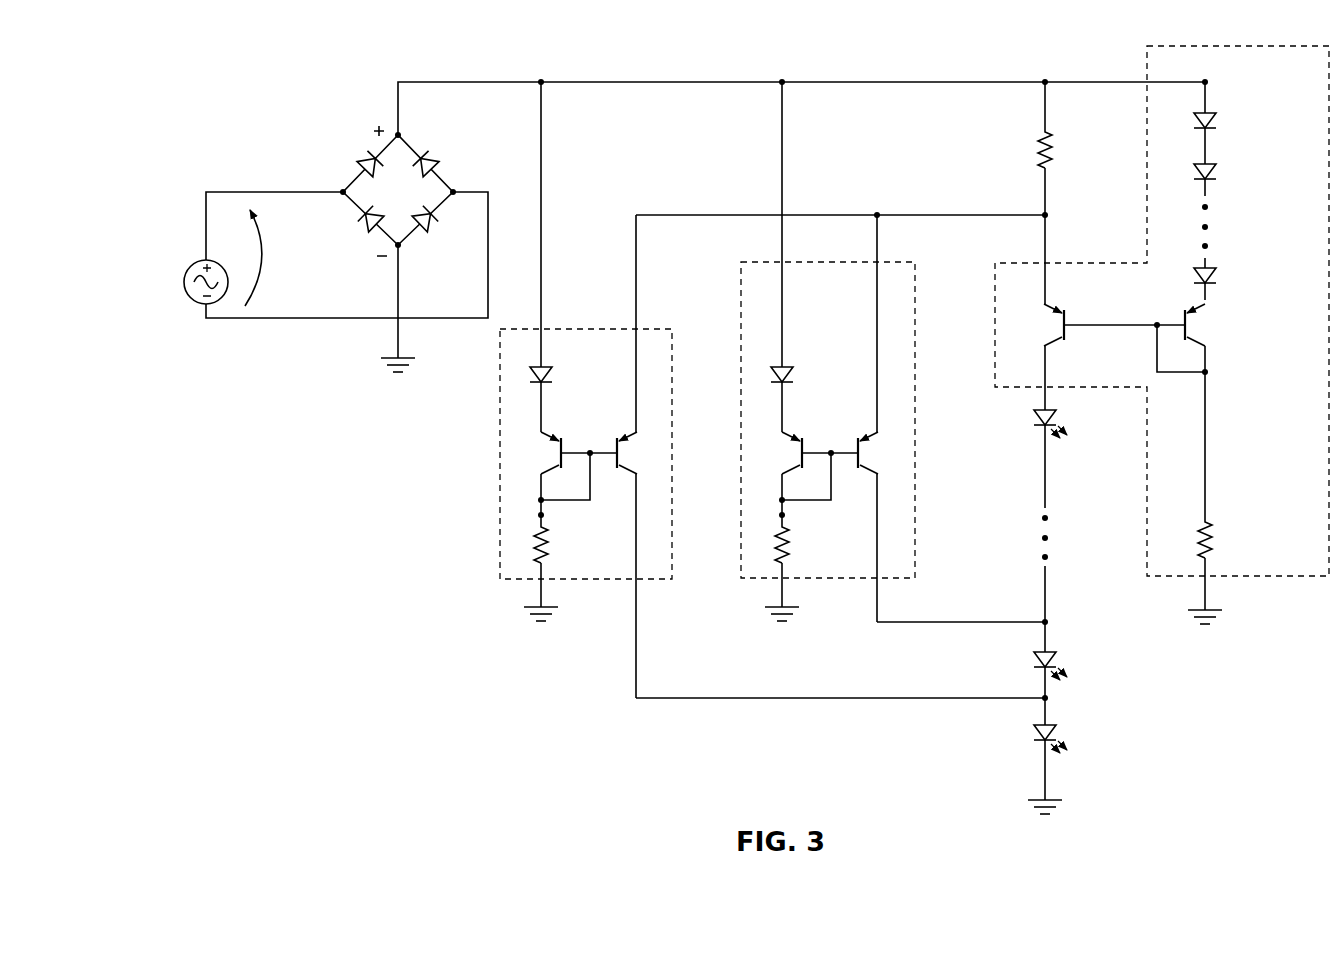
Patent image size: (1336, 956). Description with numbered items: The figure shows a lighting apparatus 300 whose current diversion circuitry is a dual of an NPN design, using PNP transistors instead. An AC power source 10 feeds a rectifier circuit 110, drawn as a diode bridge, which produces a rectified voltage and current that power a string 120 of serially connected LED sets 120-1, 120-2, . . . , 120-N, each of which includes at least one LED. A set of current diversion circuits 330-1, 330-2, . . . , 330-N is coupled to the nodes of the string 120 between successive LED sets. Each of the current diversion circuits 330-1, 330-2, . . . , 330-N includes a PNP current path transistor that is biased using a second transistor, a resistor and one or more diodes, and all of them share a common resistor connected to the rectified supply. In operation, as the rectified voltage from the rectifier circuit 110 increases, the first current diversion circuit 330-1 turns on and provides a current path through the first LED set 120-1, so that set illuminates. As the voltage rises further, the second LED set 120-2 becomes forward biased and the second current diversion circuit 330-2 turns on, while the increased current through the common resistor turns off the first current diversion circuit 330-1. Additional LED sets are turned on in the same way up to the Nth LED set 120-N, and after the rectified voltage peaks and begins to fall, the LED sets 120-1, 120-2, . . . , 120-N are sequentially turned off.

The lighting apparatus 300 is at (244, 57).
The AC power source 10 is at (184, 281).
The rectifier circuit 110 is at (340, 150).
The string of LED sets 120 is at (1026, 748).
The first LED set 120-1 is at (1062, 731).
The second LED set 120-2 is at (1062, 658).
The Nth LED set 120-N is at (1028, 418).
The first current diversion circuit 330-1 is at (654, 582).
The second current diversion circuit 330-2 is at (915, 541).
The Nth current diversion circuit 330-N is at (1238, 46).